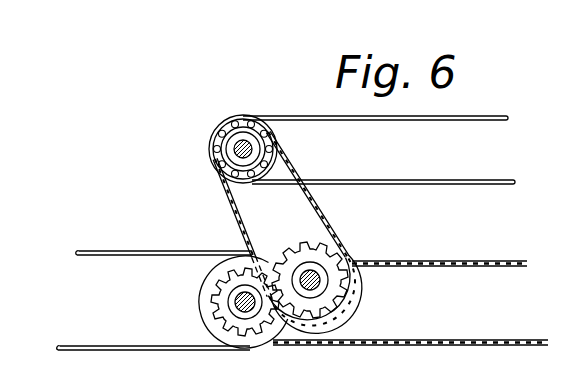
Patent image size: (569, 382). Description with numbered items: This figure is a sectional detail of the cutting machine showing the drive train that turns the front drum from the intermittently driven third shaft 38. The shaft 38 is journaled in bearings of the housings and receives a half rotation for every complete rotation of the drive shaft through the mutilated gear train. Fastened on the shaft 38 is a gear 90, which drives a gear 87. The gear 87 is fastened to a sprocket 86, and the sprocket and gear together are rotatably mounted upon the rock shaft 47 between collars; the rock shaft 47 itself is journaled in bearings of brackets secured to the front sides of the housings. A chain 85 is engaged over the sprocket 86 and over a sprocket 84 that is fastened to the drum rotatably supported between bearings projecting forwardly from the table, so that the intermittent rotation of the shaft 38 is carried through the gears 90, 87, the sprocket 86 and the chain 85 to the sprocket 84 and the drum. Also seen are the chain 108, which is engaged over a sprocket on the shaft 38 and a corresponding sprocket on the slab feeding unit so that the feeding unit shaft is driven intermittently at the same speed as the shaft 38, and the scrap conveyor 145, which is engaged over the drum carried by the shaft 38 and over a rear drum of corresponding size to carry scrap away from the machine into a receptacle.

The sprocket 84 is at (279, 153).
The chain 85 is at (312, 197).
The sprocket 86 is at (298, 244).
The rock shaft 47 is at (318, 272).
The gear 87 is at (350, 293).
The chain 108 is at (495, 261).
The scrap conveyor 145 is at (155, 251).
The third shaft 38 is at (237, 300).
The gear 90 is at (217, 313).